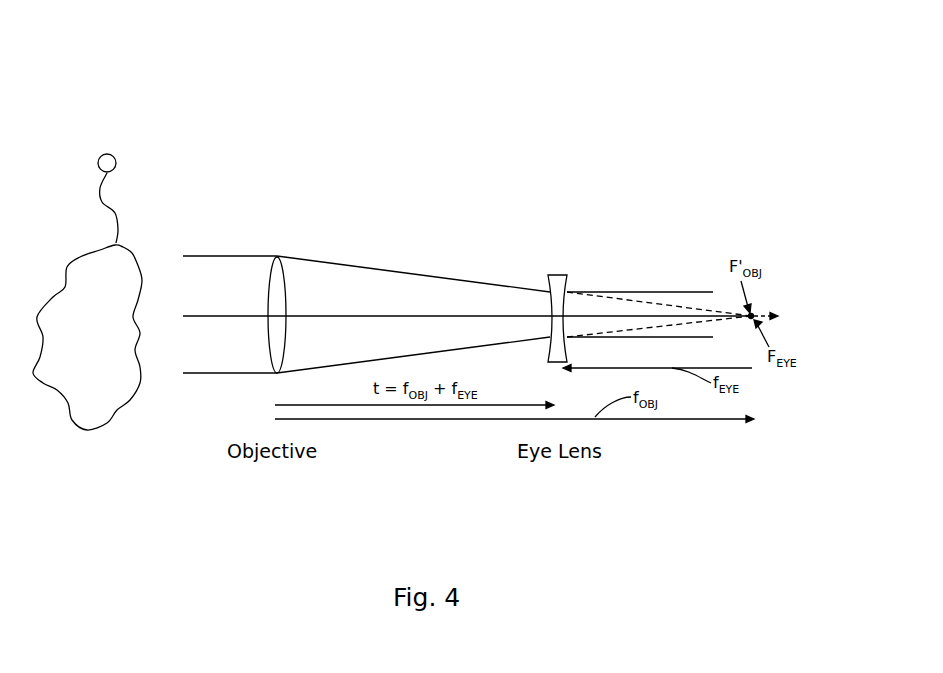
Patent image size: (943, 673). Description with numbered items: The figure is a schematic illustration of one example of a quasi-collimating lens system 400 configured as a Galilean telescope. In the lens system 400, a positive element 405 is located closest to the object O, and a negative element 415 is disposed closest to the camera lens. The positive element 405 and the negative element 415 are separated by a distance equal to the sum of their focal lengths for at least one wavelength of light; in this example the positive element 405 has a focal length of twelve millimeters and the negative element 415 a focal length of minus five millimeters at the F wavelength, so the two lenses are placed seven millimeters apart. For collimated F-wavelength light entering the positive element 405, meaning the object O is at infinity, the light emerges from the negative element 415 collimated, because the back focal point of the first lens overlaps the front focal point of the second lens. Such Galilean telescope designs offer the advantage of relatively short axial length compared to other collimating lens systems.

The lens system 400 is at (471, 54).
The positive element 405 is at (285, 285).
The negative element 415 is at (568, 277).